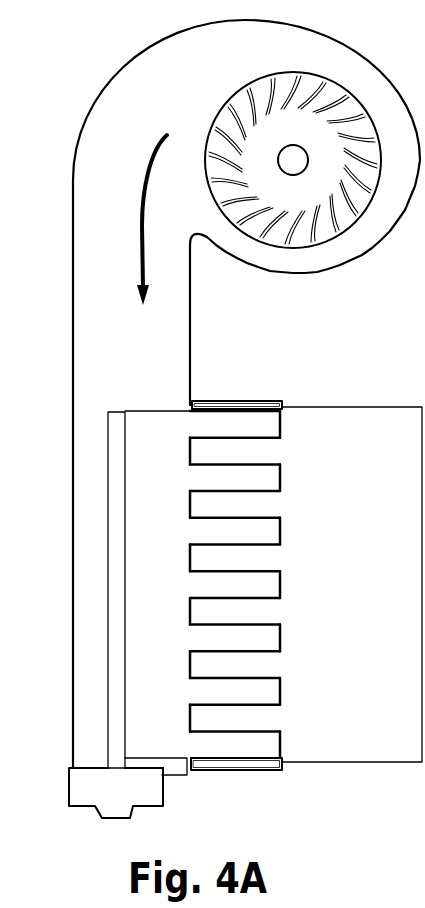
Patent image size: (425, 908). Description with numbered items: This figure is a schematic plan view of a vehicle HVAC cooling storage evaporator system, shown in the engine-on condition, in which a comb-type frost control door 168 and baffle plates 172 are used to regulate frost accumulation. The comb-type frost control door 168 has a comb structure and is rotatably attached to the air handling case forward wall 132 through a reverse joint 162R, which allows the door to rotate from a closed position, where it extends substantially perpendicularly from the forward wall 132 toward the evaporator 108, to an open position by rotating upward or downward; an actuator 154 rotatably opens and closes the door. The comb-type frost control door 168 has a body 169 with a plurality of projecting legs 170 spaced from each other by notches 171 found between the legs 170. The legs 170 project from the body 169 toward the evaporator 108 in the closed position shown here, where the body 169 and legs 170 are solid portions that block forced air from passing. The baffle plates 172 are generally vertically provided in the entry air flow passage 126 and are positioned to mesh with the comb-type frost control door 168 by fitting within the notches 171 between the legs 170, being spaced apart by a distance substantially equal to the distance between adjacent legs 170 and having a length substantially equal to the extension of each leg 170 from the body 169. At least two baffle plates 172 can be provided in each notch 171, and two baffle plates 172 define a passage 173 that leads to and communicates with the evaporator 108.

The case forward wall 132 is at (73, 317).
The comb-type frost control door 168 is at (168, 388).
The entry air flow passage 126 is at (275, 368).
The evaporator 108 is at (378, 795).
The reverse joint 162R is at (115, 442).
The body 169 is at (148, 468).
The projecting legs 170 is at (210, 583).
The notches 171 is at (187, 720).
The baffle plates 172 is at (258, 517).
The passage 173 is at (262, 475).
The actuator 154 is at (115, 792).